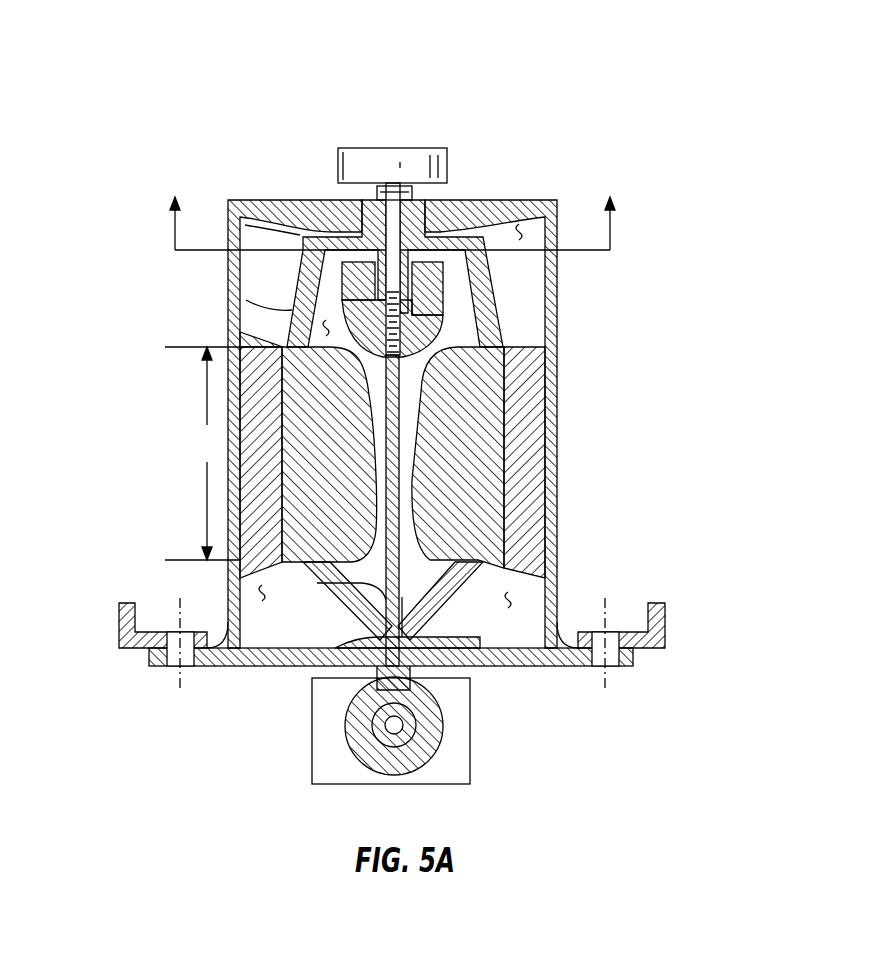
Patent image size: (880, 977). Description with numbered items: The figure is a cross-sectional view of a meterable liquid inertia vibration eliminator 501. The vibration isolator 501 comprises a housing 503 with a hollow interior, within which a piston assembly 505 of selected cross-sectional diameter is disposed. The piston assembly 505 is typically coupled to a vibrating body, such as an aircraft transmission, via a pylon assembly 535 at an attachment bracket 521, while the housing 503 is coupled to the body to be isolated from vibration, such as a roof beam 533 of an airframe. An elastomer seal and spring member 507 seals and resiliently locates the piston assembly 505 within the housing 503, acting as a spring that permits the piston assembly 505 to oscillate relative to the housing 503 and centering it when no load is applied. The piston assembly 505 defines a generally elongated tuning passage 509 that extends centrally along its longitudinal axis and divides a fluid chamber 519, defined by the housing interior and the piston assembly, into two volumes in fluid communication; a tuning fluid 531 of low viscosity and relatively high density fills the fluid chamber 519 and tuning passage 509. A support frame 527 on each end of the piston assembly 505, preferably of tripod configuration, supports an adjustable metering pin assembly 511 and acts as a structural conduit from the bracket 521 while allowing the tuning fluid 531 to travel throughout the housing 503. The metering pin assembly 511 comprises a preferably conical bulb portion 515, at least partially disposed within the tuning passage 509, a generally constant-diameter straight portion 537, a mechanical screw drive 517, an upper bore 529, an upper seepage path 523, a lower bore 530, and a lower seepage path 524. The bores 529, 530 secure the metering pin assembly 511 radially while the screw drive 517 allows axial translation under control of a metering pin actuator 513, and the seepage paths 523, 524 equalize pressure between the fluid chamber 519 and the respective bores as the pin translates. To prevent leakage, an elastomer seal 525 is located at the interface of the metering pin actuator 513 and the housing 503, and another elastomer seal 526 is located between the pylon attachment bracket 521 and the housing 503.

The meterable liquid inertia vibration eliminator 501 is at (590, 106).
The housing 503 is at (567, 667).
The piston assembly 505 is at (505, 377).
The elastomer seal and spring member 507 is at (265, 486).
The tuning passage 509 is at (430, 428).
The metering pin assembly 511 is at (400, 554).
The metering pin actuator 513 is at (368, 148).
The bulb portion 515 is at (430, 331).
The mechanical screw drive 517 is at (420, 318).
The fluid chamber 519 is at (266, 237).
The attachment bracket 521 is at (442, 746).
The upper seepage path 523 is at (360, 300).
The lower seepage path 524 is at (385, 601).
The elastomer seal 525 is at (373, 207).
The elastomer seal 526 is at (382, 668).
The support frame 527 is at (325, 305).
The upper bore 529 is at (458, 256).
The lower bore 530 is at (446, 656).
The tuning fluid 531 is at (521, 230).
The roof beam 533 is at (126, 605).
The pylon assembly 535 is at (471, 781).
The straight portion 537 is at (528, 460).